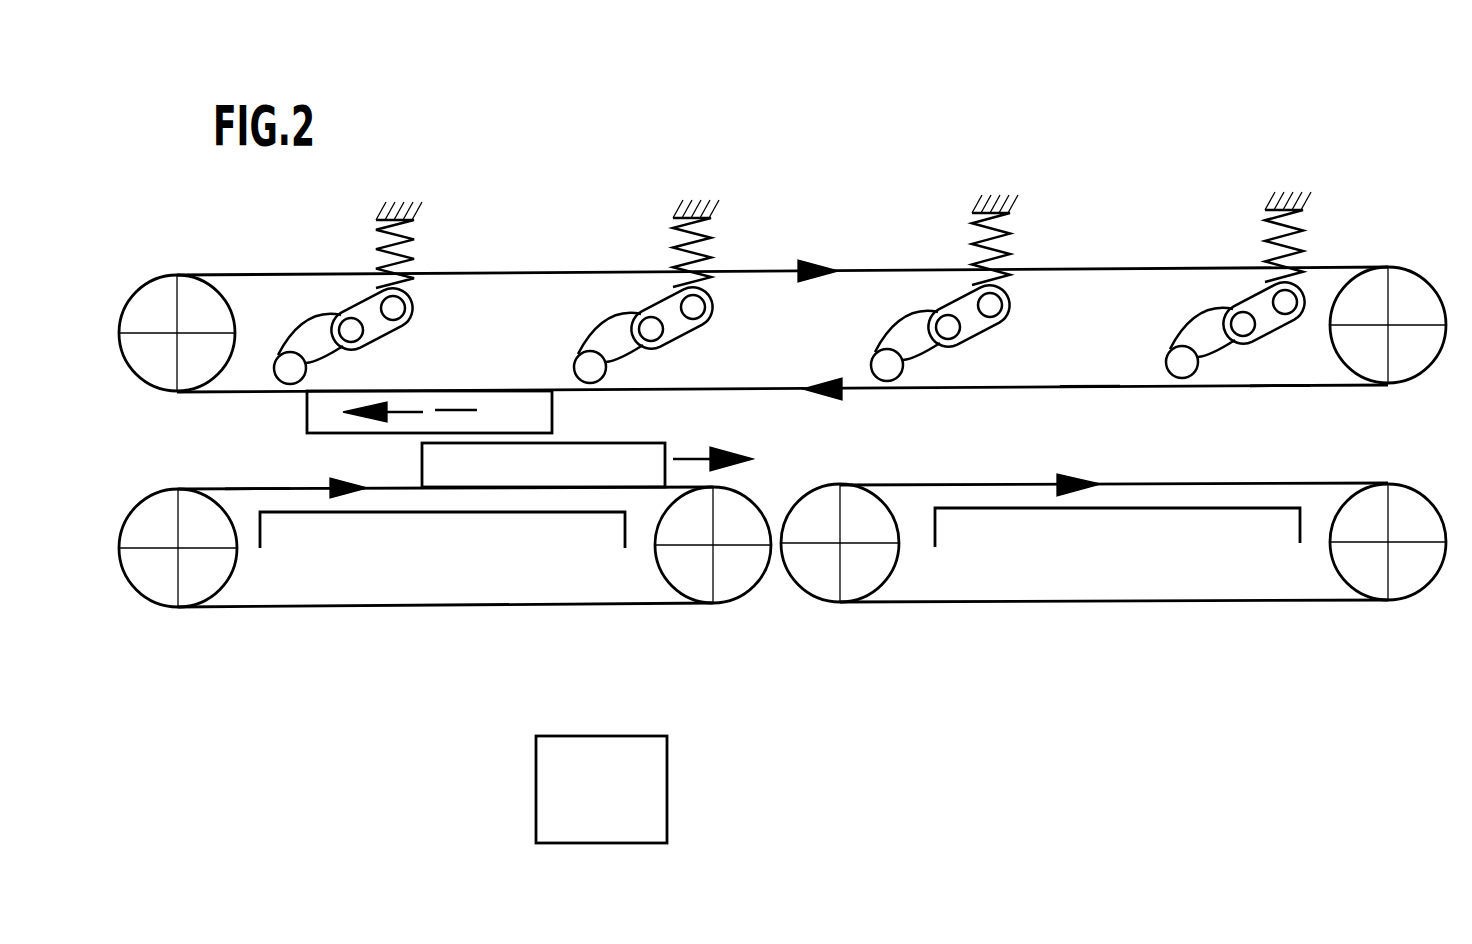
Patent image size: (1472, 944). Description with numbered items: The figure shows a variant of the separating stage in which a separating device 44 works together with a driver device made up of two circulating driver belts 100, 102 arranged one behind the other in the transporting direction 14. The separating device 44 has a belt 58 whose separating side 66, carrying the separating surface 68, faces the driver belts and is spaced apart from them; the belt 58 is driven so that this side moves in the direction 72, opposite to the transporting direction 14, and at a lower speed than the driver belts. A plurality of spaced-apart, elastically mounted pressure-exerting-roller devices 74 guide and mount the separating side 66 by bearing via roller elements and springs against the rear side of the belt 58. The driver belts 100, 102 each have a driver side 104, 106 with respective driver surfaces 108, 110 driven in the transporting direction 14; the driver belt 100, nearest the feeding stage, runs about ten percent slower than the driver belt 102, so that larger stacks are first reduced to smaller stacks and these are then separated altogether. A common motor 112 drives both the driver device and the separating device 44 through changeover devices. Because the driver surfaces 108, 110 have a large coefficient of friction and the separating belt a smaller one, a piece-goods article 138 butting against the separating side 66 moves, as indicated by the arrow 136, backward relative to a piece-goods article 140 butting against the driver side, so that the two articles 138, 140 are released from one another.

The transporting direction 14 is at (692, 459).
The separating device 44 is at (1135, 142).
The belt 58 is at (1225, 268).
The separating side 66 is at (1277, 387).
The separating surface 68 is at (1088, 390).
The direction 72 is at (818, 385).
The pressure-exerting-roller device 74 is at (952, 160).
The driver belt 100 is at (444, 586).
The driver belt 102 is at (1113, 588).
The driver side 104 is at (222, 488).
The driver side 106 is at (1355, 483).
The driver surface 108 is at (247, 488).
The driver surface 110 is at (975, 485).
The common motor 112 is at (635, 777).
The relative movement direction 136 is at (530, 405).
The piece-goods article 138 is at (432, 398).
The piece-goods article 140 is at (457, 465).